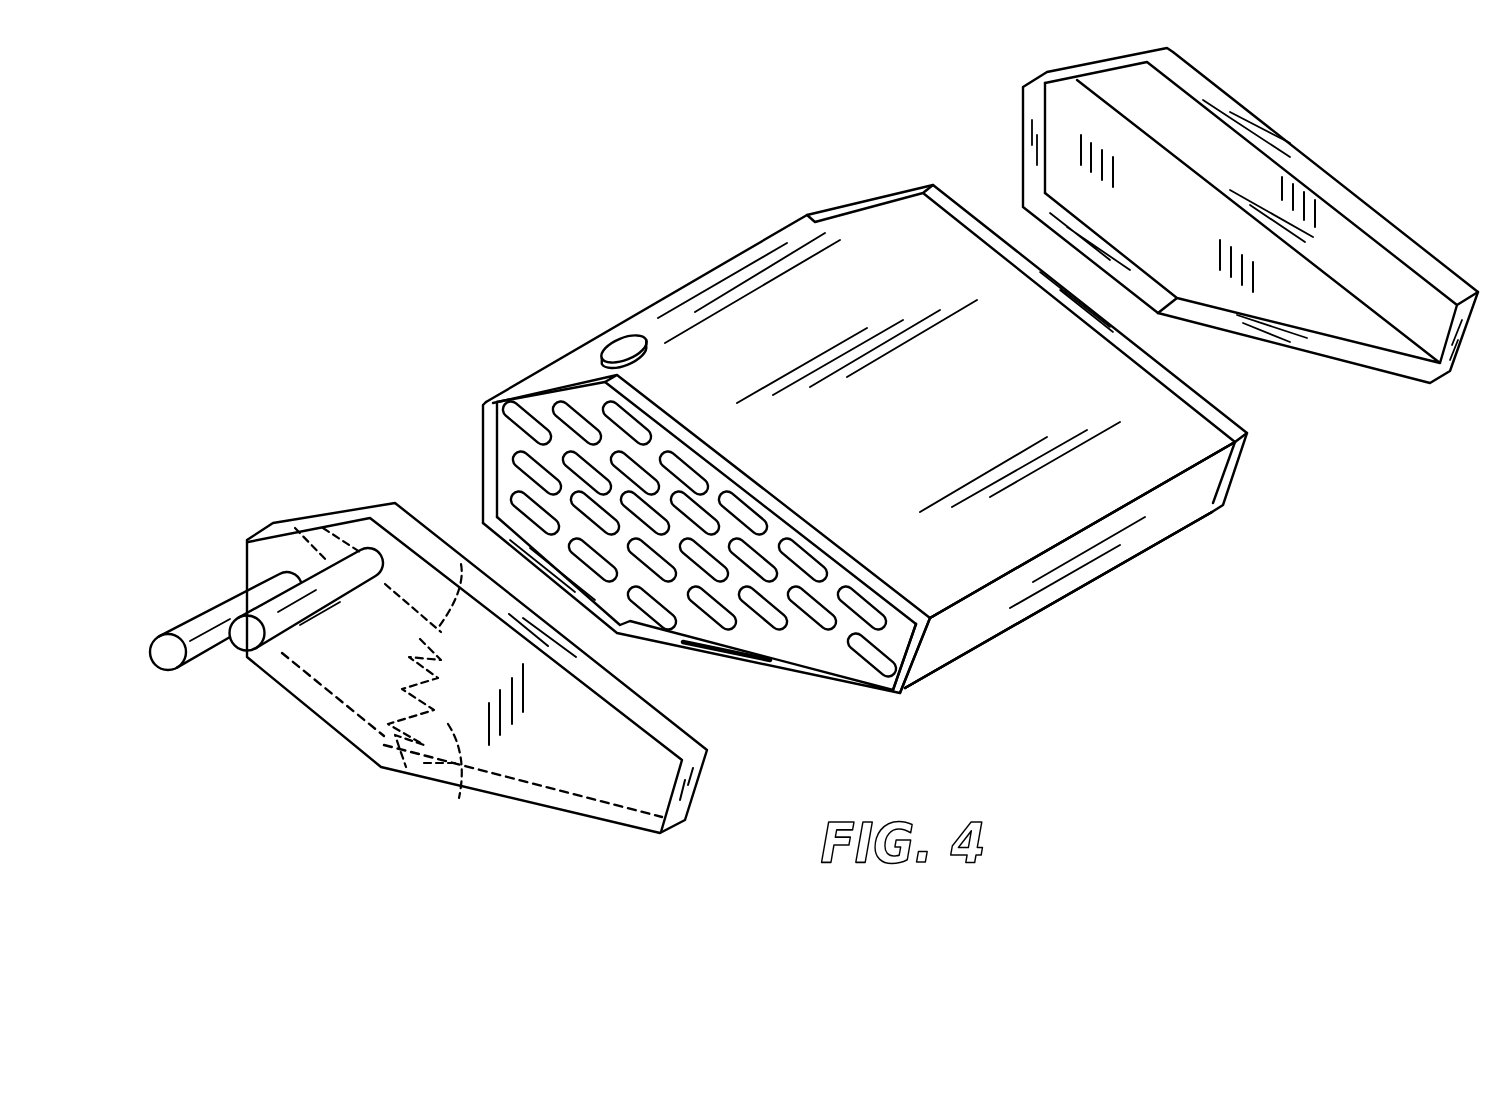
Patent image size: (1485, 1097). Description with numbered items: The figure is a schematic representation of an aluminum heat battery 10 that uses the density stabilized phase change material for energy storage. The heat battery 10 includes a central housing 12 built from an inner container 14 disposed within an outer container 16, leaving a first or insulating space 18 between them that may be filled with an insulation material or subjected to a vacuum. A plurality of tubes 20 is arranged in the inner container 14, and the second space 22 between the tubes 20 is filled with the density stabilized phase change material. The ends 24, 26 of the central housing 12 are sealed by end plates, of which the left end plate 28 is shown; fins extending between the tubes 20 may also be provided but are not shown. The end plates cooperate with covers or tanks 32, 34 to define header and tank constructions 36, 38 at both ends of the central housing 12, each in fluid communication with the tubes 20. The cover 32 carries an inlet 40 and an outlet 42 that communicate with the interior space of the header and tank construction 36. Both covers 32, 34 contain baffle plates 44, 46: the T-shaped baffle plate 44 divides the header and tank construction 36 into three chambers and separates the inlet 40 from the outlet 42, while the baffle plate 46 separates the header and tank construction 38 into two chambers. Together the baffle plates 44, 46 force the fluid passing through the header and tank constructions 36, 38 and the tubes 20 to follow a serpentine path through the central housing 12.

The heat battery 10 is at (732, 214).
The central housing 12 is at (1157, 530).
The inner container 14 is at (898, 680).
The outer container 16 is at (980, 590).
The insulating space 18 is at (915, 640).
The tubes 20 is at (770, 618).
The second space 22 is at (828, 652).
The end of the central housing 24 is at (515, 335).
The end of the central housing 26 is at (907, 165).
The left end plate 28 is at (672, 645).
The cover 32 is at (577, 782).
The cover 34 is at (1357, 212).
The header and tank construction 36 is at (468, 385).
The header and tank construction 38 is at (1213, 527).
The inlet 40 is at (208, 655).
The outlet 42 is at (326, 606).
The T-shaped baffle plate 44 is at (470, 782).
The baffle plate 46 is at (1203, 163).